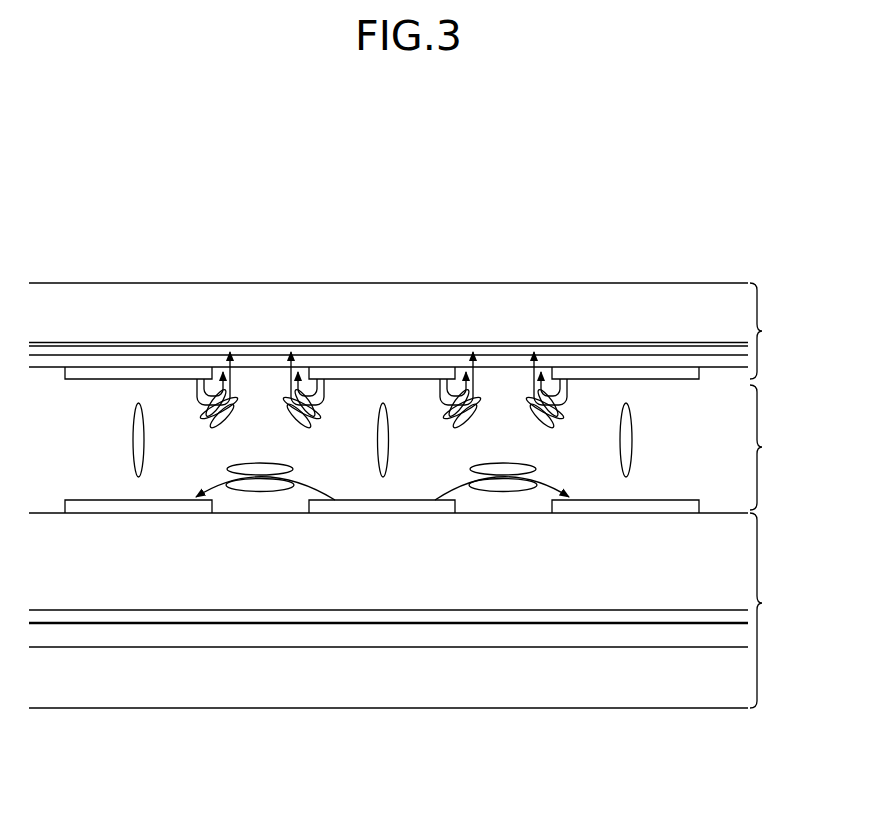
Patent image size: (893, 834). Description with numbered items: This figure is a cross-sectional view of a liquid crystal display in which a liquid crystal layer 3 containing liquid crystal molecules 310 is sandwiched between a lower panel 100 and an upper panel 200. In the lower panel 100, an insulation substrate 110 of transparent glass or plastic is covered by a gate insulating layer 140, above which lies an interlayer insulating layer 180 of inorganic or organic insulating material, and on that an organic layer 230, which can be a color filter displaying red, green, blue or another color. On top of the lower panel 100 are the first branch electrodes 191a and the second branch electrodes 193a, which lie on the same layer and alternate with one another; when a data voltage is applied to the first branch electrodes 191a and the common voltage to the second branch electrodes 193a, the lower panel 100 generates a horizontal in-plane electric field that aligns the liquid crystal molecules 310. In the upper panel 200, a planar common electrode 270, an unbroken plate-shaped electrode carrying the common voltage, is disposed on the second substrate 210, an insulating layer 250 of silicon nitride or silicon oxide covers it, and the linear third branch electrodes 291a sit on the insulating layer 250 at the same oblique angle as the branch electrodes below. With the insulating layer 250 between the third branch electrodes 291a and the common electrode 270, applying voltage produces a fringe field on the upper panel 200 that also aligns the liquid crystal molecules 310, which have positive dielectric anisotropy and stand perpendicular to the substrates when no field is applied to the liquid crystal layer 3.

The liquid crystal layer 3 is at (764, 447).
The lower panel 100 is at (776, 610).
The insulation substrate 110 is at (287, 688).
The gate insulating layer 140 is at (516, 635).
The interlayer insulating layer 180 is at (75, 617).
The first branch electrodes 191a is at (160, 505).
The second branch electrodes 193a is at (388, 505).
The upper panel 200 is at (776, 331).
The second substrate 210 is at (503, 300).
The organic layer 230 is at (686, 585).
The insulating layer 250 is at (702, 364).
The common electrode 270 is at (262, 350).
The third branch electrodes 291a is at (137, 373).
The liquid crystal molecules 310 is at (632, 440).